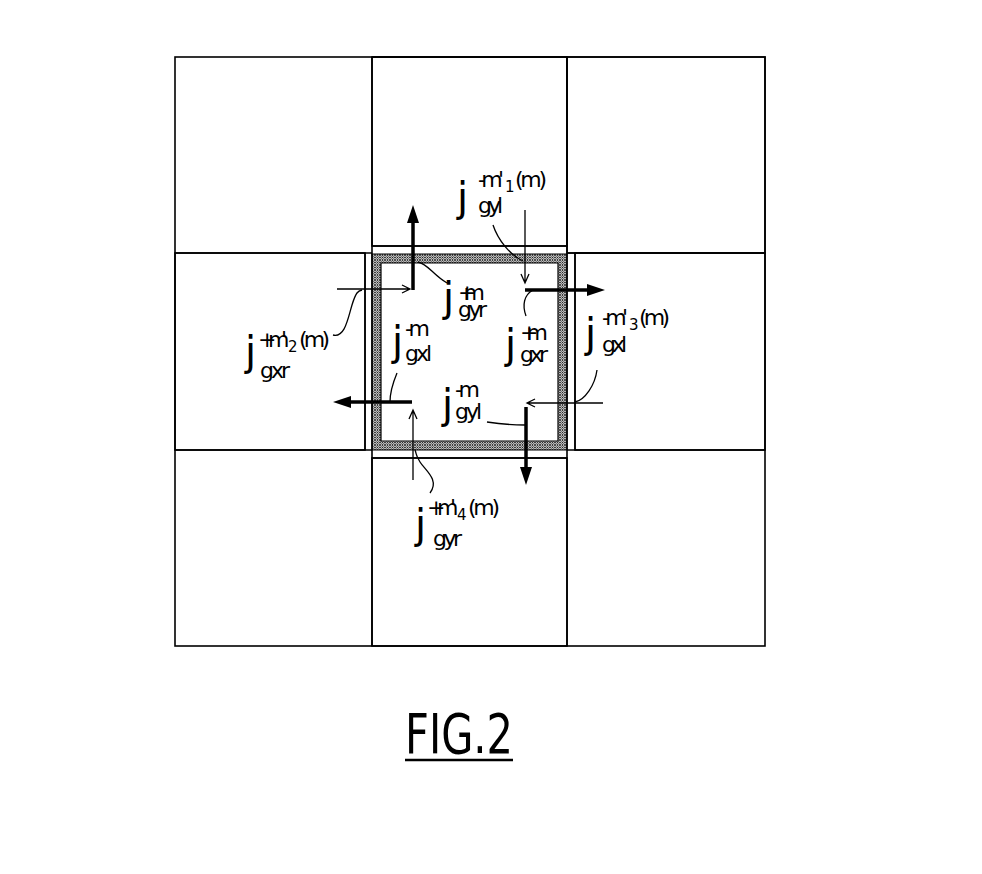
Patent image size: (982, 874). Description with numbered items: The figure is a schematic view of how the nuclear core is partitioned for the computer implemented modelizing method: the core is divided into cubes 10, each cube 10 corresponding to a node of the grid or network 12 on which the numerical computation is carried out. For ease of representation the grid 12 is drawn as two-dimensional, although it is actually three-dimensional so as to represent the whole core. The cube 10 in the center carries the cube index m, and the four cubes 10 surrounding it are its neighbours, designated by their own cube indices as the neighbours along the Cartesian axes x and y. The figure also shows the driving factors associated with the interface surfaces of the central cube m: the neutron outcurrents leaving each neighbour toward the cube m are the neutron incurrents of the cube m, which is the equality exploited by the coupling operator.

The cube 10 is at (508, 95).
The grid 12 is at (808, 126).
The cube index m is at (517, 352).